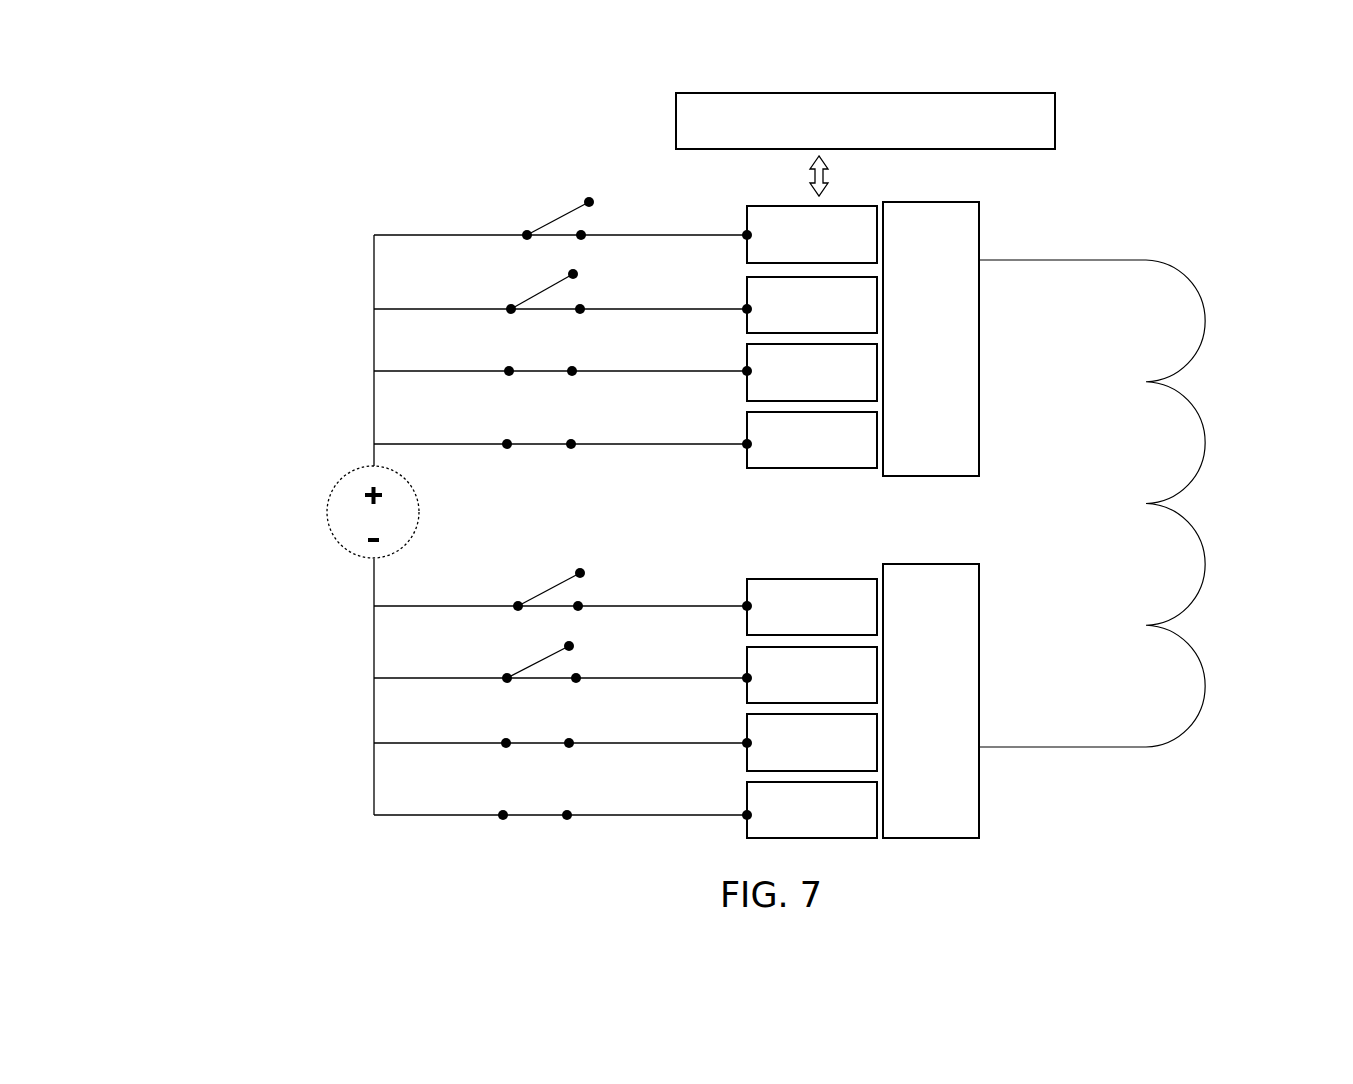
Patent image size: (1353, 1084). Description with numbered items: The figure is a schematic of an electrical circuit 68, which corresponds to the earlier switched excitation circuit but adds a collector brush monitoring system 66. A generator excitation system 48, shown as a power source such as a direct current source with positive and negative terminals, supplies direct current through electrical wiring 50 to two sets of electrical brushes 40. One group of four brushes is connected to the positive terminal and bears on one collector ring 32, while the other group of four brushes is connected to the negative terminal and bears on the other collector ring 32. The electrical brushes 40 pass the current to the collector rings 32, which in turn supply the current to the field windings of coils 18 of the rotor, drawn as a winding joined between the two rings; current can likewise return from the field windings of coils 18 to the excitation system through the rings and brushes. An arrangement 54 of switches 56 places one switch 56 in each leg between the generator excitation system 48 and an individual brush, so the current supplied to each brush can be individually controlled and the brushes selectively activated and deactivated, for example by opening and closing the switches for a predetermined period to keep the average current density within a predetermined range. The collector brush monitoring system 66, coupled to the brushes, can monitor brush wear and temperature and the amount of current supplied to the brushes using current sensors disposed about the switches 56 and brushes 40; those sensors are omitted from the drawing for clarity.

The field windings of coils 18 is at (1222, 498).
The collector ring 32 is at (979, 230).
The electrical brush 40 is at (747, 220).
The generator excitation system 48 is at (353, 555).
The electrical wiring 50 is at (387, 235).
The arrangement of switches 54 is at (455, 174).
The switch 56 is at (557, 217).
The collector brush monitoring system 66 is at (1055, 140).
The electrical circuit 68 is at (155, 245).